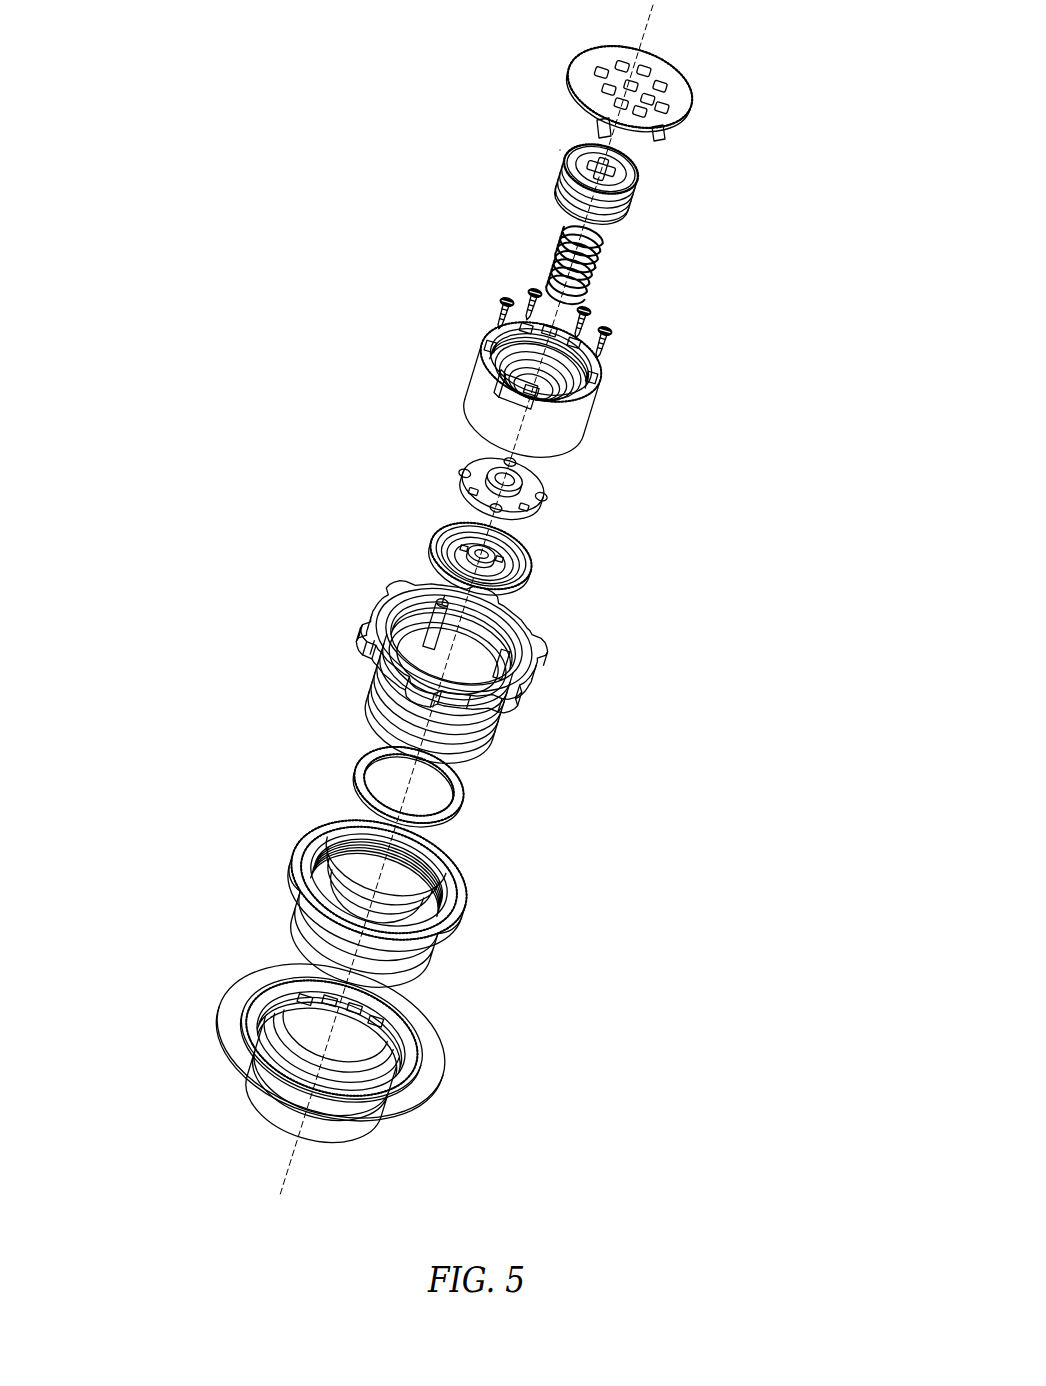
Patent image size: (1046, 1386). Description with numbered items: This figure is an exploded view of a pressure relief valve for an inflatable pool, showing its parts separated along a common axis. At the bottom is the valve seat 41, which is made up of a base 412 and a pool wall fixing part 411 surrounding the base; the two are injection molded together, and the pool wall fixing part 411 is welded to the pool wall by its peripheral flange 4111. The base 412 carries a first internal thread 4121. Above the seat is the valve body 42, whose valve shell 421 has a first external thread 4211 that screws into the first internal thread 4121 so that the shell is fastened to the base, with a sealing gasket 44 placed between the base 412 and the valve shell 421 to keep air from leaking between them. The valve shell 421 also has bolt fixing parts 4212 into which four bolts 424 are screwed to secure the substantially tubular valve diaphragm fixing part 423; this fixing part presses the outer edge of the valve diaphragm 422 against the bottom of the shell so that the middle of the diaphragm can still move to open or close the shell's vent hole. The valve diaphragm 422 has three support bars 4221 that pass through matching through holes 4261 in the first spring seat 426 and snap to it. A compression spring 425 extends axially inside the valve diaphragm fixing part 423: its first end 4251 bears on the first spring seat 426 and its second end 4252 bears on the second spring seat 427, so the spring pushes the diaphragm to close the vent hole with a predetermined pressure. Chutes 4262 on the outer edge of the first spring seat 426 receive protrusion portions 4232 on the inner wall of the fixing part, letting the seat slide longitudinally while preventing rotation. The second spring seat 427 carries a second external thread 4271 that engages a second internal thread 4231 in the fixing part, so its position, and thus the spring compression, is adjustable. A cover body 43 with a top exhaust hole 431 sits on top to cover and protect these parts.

The valve seat 41 is at (358, 992).
The pool wall fixing part 411 is at (390, 1074).
The peripheral flange 4111 is at (435, 1050).
The base 412 is at (420, 904).
The first internal thread 4121 is at (418, 888).
The valve body 42 is at (352, 389).
The valve shell 421 is at (454, 678).
The first external thread 4211 is at (470, 728).
The bolt fixing parts 4212 is at (425, 635).
The valve diaphragm 422 is at (491, 551).
The support bar 4221 is at (462, 545).
The valve diaphragm fixing part 423 is at (559, 397).
The second internal thread 4231 is at (590, 380).
The protrusion portion 4232 is at (520, 372).
The bolts 424 is at (612, 343).
The compression spring 425 is at (558, 230).
The first end of the spring 4251 is at (555, 285).
The second end of the spring 4252 is at (567, 230).
The first spring seat 426 is at (503, 501).
The through hole 4261 is at (527, 507).
The chute 4262 is at (470, 478).
The second spring seat 427 is at (608, 171).
The second external thread 4271 is at (565, 187).
The cover body 43 is at (678, 83).
The top exhaust hole 431 is at (667, 78).
The sealing gasket 44 is at (375, 770).